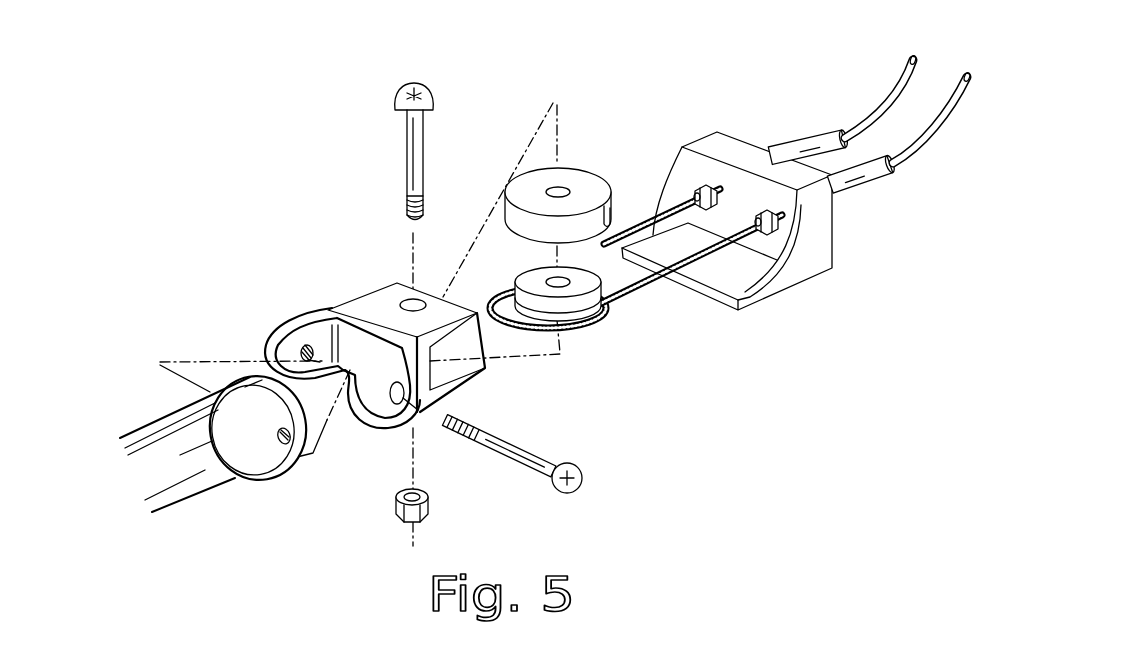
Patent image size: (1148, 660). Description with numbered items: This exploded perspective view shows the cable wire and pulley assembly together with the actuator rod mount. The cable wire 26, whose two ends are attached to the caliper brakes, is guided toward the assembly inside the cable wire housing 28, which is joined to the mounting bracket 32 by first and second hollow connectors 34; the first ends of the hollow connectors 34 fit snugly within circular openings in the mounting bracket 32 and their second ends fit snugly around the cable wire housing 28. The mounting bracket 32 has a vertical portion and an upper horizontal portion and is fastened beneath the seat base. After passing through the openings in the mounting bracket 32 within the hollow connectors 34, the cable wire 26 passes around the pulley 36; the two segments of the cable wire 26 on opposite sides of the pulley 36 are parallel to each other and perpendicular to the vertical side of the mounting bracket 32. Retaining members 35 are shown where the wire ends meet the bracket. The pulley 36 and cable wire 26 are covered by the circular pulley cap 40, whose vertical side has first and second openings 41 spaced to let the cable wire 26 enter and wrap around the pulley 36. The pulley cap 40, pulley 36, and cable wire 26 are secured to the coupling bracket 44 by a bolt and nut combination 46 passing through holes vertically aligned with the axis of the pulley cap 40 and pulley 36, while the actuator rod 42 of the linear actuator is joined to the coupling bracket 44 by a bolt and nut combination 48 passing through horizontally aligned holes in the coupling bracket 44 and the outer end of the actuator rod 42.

The cable wire 26 is at (633, 292).
The cable wire housing 28 is at (892, 110).
The mounting bracket 32 is at (823, 259).
The hollow connectors 34 is at (873, 183).
The nuts 35 is at (758, 218).
The pulley 36 is at (533, 282).
The circular pulley cap 40 is at (577, 177).
The first and second openings 41 is at (612, 217).
The actuator rod 42 is at (190, 497).
The coupling bracket 44 is at (366, 306).
The bolt and nut combination 46 is at (405, 160).
The bolt and nut combination 48 is at (535, 457).